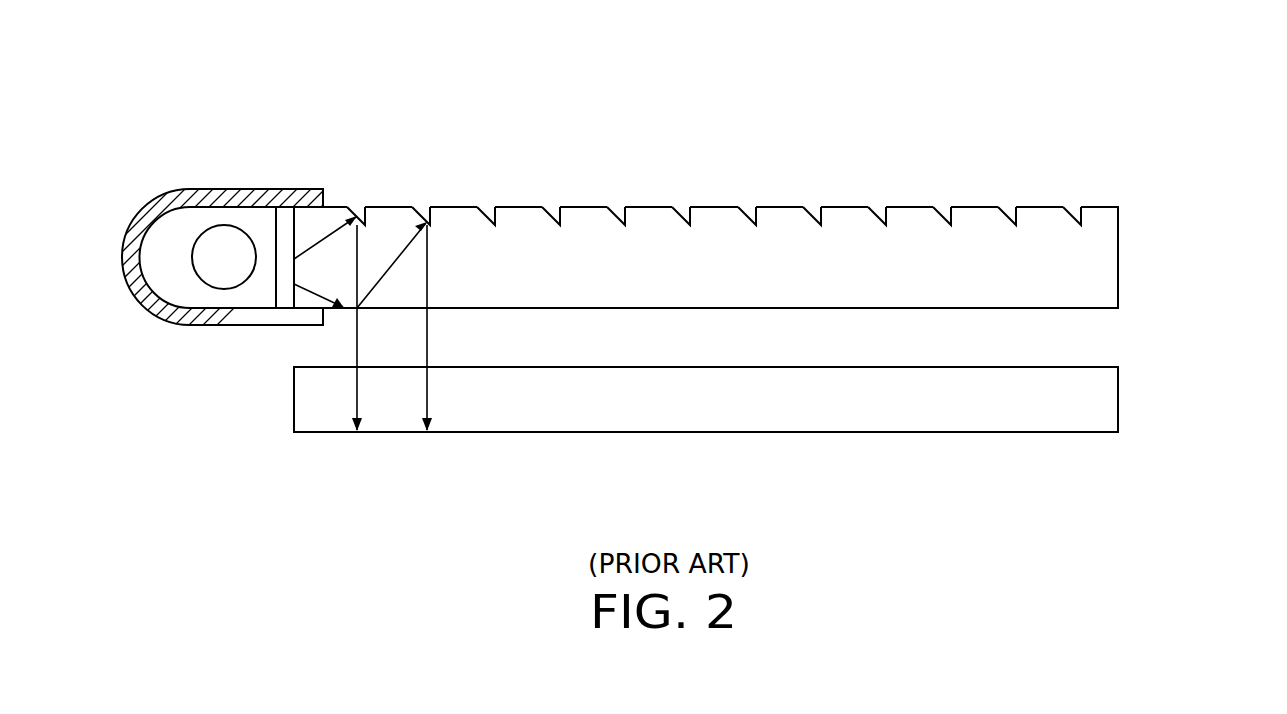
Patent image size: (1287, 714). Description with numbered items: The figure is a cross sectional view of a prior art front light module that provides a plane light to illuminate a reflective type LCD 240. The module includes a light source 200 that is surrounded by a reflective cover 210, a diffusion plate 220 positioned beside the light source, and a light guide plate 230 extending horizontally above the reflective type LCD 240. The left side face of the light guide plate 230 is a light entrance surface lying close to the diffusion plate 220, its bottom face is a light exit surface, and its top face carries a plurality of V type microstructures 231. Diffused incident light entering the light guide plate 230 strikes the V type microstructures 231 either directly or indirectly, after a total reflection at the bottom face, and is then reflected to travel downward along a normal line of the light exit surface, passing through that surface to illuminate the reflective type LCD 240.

The light source 200 is at (209, 274).
The reflective cover 210 is at (153, 212).
The diffusion plate 220 is at (283, 292).
The light guide plate 230 is at (1087, 280).
The V type microstructures 231 is at (425, 210).
The reflective type LCD 240 is at (1090, 402).